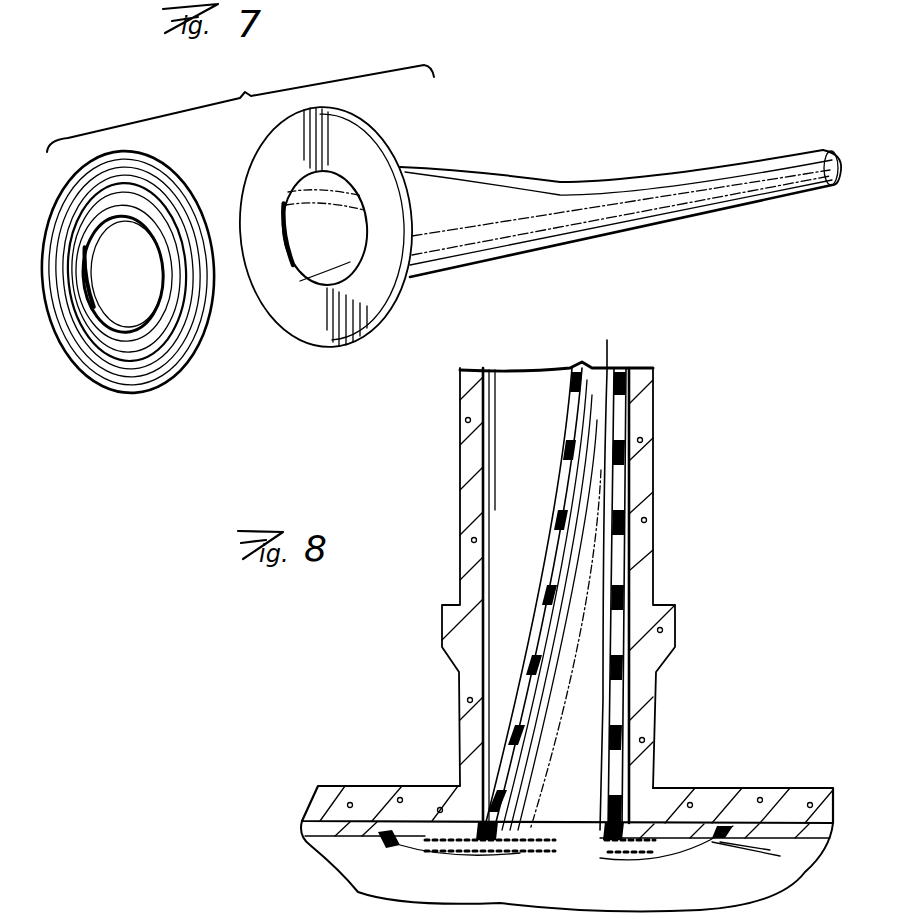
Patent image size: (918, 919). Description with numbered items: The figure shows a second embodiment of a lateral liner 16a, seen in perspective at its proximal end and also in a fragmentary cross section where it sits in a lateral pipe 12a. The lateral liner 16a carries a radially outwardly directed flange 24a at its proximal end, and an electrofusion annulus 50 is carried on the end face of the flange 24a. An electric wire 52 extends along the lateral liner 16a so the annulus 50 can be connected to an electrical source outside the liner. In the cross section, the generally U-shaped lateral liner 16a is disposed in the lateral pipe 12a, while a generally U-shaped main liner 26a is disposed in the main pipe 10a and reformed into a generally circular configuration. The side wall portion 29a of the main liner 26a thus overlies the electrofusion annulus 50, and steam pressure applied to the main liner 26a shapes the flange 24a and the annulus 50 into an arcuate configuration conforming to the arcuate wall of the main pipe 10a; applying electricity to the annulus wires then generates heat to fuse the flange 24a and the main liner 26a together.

In FIG. 8, the main pipe 10a is at (368, 785).
In FIG. 8, the lateral pipe 12a is at (458, 553).
In FIG. 7, the lateral liner 16a is at (510, 193).
In FIG. 8, the lateral liner 16a is at (545, 665).
In FIG. 7, the flange 24a is at (375, 305).
In FIG. 8, the main liner 26a is at (330, 860).
In FIG. 8, the side wall portion 29a is at (528, 856).
In FIG. 7, the electrofusion annulus 50 is at (127, 393).
In FIG. 7, the electric wire 52 is at (330, 262).